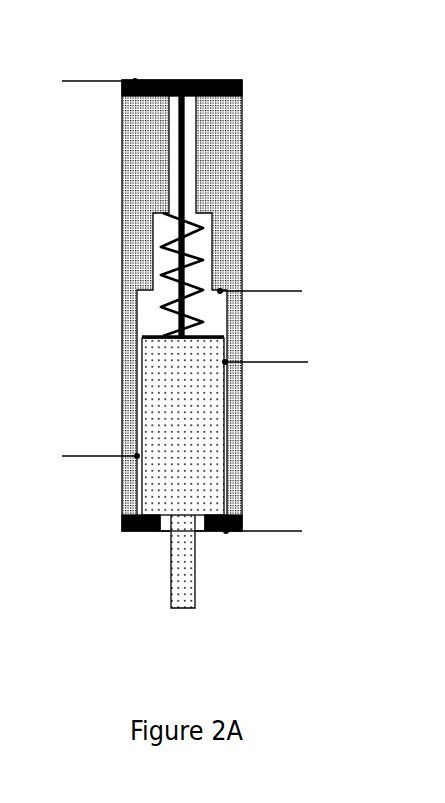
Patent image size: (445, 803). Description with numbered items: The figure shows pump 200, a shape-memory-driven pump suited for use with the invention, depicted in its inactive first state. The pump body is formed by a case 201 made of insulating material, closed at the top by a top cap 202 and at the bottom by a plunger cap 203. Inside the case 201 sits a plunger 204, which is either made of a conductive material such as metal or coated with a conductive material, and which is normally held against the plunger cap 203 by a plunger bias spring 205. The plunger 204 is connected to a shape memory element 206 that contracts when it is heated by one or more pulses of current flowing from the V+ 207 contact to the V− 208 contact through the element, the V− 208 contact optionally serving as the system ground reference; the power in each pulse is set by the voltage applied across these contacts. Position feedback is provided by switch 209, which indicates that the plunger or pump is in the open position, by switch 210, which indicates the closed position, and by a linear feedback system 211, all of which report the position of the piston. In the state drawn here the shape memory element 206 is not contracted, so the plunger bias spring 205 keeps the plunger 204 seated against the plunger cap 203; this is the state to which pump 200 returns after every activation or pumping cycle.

The pump 200 is at (225, 357).
The case 201 is at (137, 187).
The top cap 202 is at (227, 78).
The plunger cap 203 is at (138, 533).
The plunger 204 is at (197, 412).
The plunger bias spring 205 is at (184, 157).
The shape memory element 206 is at (168, 312).
The V+ contact 207 is at (107, 80).
The V- contact 208 is at (108, 458).
The switch 209 is at (255, 292).
The switch 210 is at (255, 532).
The linear feedback system 211 is at (262, 363).